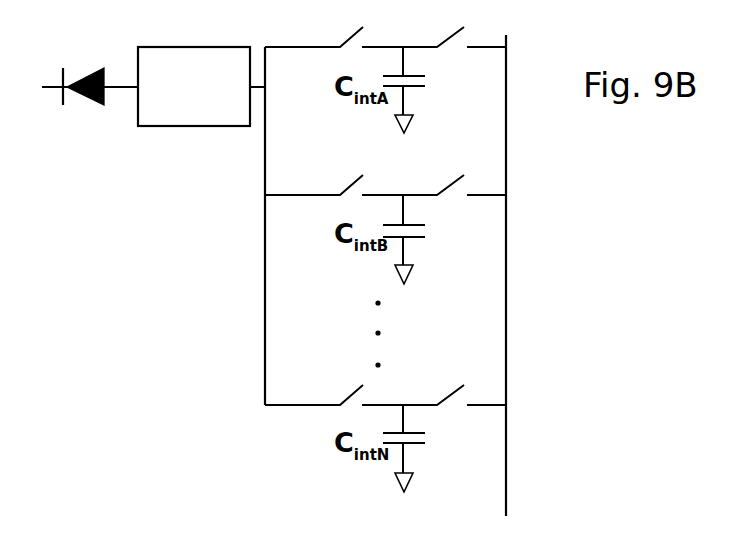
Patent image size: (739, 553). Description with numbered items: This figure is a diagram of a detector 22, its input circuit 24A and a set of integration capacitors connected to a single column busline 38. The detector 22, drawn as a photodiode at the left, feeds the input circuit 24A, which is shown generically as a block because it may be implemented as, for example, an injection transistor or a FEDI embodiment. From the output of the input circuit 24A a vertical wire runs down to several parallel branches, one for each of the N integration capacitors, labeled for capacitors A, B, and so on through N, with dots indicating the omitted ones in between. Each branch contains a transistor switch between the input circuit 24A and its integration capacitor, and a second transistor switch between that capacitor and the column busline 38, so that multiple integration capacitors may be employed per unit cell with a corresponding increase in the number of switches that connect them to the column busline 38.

The detector 22 is at (88, 72).
The input circuit 24A is at (164, 130).
The column busline 38 is at (506, 383).